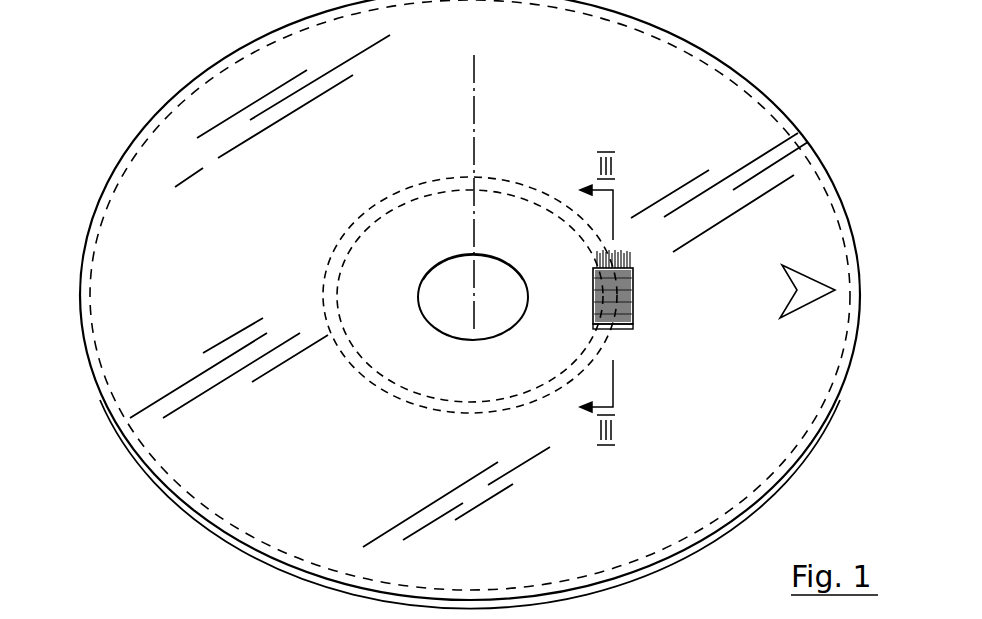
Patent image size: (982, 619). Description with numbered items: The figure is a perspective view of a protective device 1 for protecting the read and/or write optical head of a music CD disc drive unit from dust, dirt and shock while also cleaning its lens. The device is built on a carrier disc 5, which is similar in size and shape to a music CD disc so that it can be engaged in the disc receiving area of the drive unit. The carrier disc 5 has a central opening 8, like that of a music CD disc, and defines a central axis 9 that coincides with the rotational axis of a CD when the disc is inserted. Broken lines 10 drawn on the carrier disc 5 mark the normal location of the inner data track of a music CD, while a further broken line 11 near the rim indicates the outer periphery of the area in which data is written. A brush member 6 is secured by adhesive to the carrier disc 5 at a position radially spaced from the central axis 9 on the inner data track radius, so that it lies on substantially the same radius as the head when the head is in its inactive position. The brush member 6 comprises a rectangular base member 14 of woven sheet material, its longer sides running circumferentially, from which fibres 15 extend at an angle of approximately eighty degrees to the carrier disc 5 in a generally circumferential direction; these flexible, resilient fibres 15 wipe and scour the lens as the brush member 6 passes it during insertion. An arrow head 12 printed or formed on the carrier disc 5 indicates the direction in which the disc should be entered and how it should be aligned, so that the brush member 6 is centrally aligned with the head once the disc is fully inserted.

The protective device 1 is at (806, 98).
The carrier disc 5 is at (177, 448).
The brush member 6 is at (594, 310).
The central opening 8 is at (444, 326).
The central axis 9 is at (476, 97).
The broken lines 10 is at (504, 183).
The broken line 11 is at (708, 60).
The arrow head 12 is at (810, 280).
The base member 14 is at (633, 334).
The fibres 15 is at (625, 254).